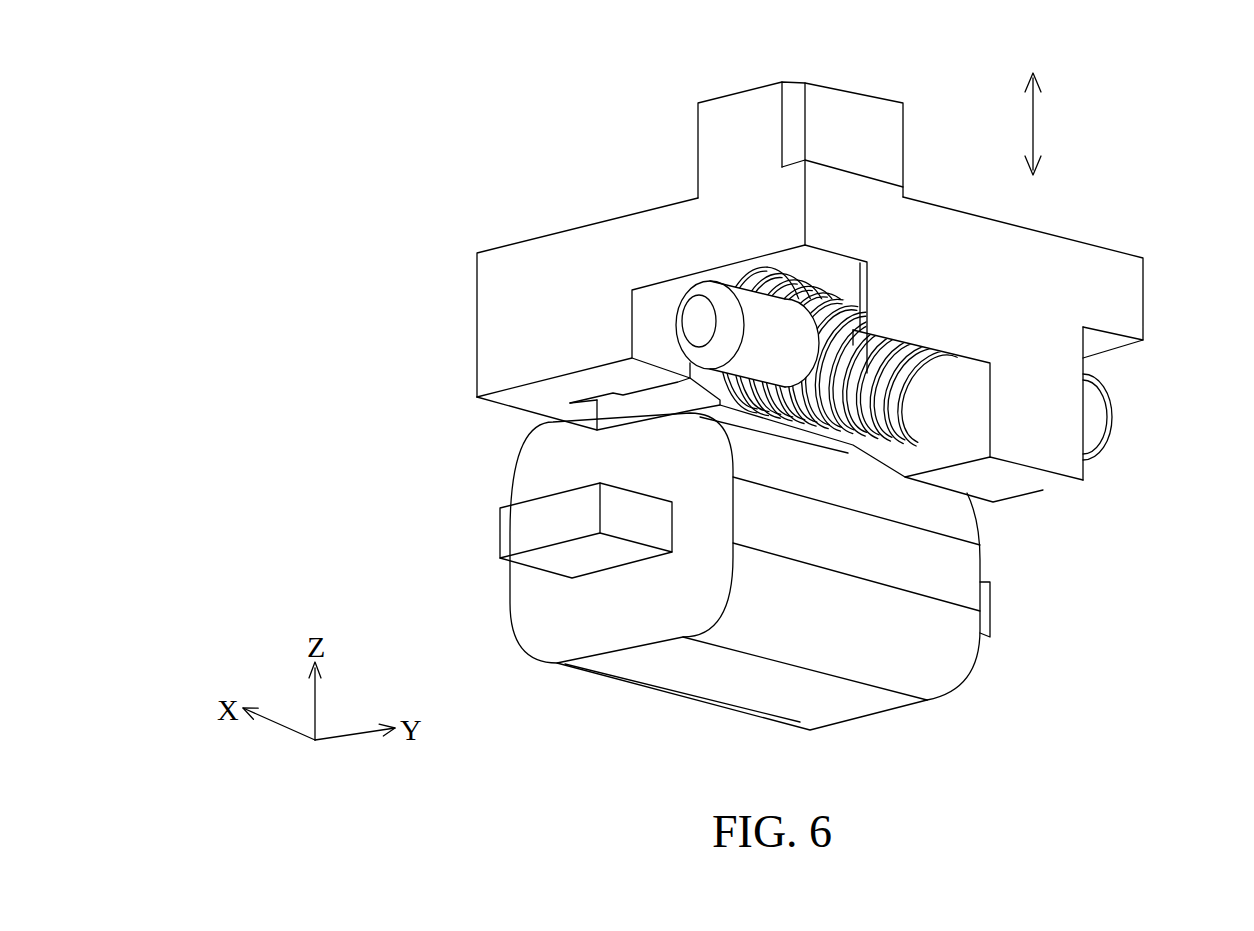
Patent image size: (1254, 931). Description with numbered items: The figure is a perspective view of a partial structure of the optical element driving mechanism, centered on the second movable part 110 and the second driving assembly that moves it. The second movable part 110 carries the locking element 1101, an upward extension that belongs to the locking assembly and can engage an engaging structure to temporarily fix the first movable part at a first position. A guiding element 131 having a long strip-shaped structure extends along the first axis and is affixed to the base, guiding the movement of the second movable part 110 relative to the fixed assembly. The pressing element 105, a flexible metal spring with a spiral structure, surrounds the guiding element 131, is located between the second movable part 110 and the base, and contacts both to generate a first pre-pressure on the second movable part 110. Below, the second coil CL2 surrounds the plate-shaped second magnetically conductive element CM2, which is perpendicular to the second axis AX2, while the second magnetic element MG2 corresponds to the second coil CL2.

The second movable part 110 is at (1125, 297).
The locking element 1101 is at (887, 147).
The pressing element 105 is at (938, 415).
The guiding element 131 is at (693, 323).
The second axis AX2 is at (1031, 110).
The second magnetic element MG2 is at (622, 412).
The second magnetically conductive element CM2 is at (527, 530).
The second coil CL2 is at (940, 658).